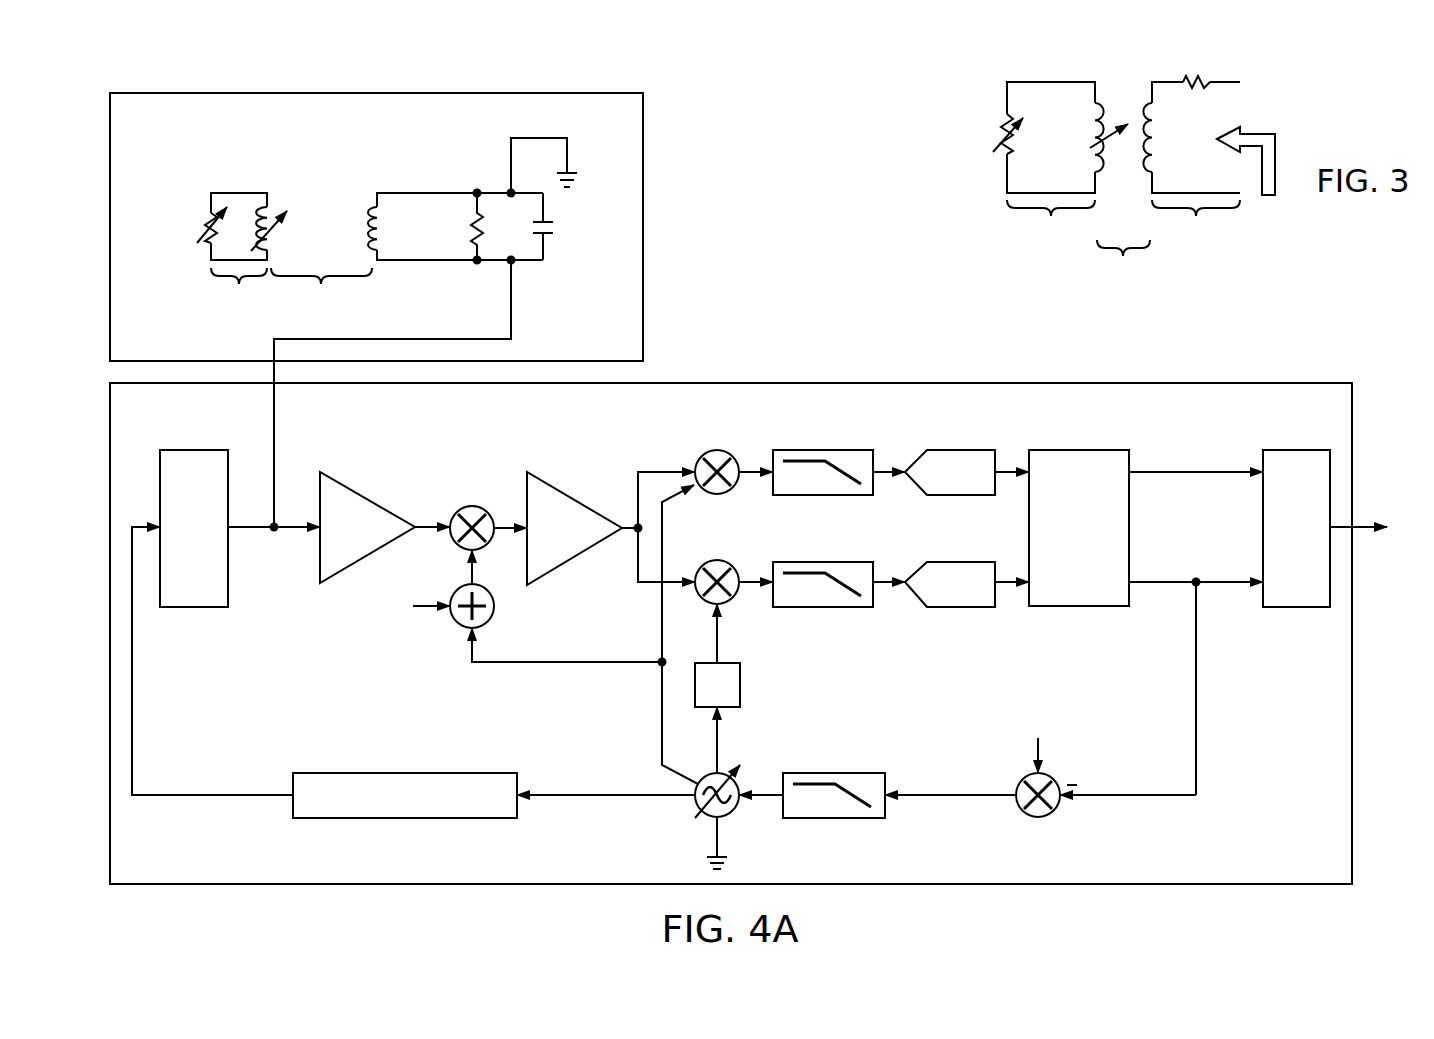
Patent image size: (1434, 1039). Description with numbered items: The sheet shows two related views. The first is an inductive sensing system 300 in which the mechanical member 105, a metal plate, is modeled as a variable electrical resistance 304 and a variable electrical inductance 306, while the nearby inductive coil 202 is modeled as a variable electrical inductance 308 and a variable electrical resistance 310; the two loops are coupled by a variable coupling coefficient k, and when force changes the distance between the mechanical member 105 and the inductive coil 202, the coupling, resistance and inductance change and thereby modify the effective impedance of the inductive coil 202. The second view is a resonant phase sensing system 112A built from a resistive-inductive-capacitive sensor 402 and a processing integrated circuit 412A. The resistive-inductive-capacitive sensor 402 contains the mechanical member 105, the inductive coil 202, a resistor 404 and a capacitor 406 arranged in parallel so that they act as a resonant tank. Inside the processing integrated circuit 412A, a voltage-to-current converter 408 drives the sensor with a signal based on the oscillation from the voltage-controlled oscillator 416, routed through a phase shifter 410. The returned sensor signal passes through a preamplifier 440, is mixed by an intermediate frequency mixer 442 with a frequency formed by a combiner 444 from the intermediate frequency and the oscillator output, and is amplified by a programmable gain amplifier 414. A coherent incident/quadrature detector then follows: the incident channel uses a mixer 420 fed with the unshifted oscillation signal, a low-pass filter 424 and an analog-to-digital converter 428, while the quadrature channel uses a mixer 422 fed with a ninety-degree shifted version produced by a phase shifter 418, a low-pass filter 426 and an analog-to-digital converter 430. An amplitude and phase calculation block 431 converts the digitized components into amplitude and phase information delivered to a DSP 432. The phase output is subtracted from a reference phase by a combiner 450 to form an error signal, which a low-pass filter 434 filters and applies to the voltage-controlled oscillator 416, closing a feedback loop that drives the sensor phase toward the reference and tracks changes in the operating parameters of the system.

In FIG. 3, the inductive sensing system 300 is at (1318, 102).
In FIG. 3, the variable electrical resistance 304 is at (1000, 138).
In FIG. 4A, the variable electrical resistance 304 is at (205, 226).
In FIG. 3, the variable electrical inductance 306 is at (1098, 102).
In FIG. 4A, the variable electrical inductance 306 is at (279, 240).
In FIG. 3, the variable electrical inductance 308 is at (1148, 176).
In FIG. 3, the variable electrical resistance 310 is at (1197, 76).
In FIG. 3, the mechanical member 105 is at (1035, 143).
In FIG. 4A, the mechanical member 105 is at (240, 253).
In FIG. 3, the inductive coil 202 is at (1196, 134).
In FIG. 4A, the inductive coil 202 is at (366, 213).
In FIG. 4A, the resonant phase sensing system 112A is at (724, 332).
In FIG. 4A, the resistive-inductive-capacitive sensor 402 is at (264, 91).
In FIG. 4A, the resistor 404 is at (472, 226).
In FIG. 4A, the capacitor 406 is at (553, 228).
In FIG. 4A, the processing integrated circuit 412A is at (900, 382).
In FIG. 4A, the voltage-to-current converter 408 is at (195, 449).
In FIG. 4A, the preamplifier 440 is at (371, 500).
In FIG. 4A, the intermediate frequency mixer 442 is at (484, 507).
In FIG. 4A, the programmable gain amplifier 414 is at (577, 500).
In FIG. 4A, the combiner 444 is at (457, 626).
In FIG. 4A, the mixer 420 is at (729, 492).
In FIG. 4A, the mixer 422 is at (729, 602).
In FIG. 4A, the low-pass filter 424 is at (823, 497).
In FIG. 4A, the low-pass filter 426 is at (823, 608).
In FIG. 4A, the analog-to-digital converter 428 is at (945, 497).
In FIG. 4A, the analog-to-digital converter 430 is at (945, 608).
In FIG. 4A, the amplitude and phase calculation block 431 is at (1080, 608).
In FIG. 4A, the DSP 432 is at (1279, 559).
In FIG. 4A, the phase shifter 418 is at (742, 686).
In FIG. 4A, the phase shifter 410 is at (405, 820).
In FIG. 4A, the voltage-controlled oscillator 416 is at (727, 812).
In FIG. 4A, the low-pass filter 434 is at (835, 820).
In FIG. 4A, the combiner 450 is at (1058, 812).